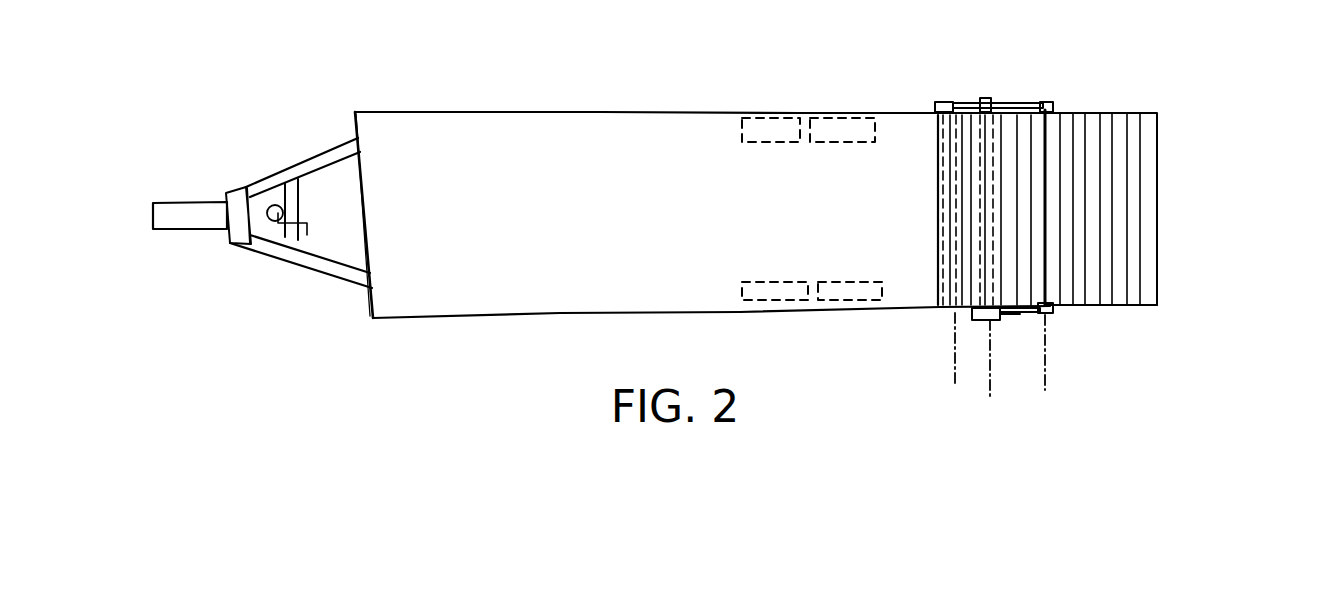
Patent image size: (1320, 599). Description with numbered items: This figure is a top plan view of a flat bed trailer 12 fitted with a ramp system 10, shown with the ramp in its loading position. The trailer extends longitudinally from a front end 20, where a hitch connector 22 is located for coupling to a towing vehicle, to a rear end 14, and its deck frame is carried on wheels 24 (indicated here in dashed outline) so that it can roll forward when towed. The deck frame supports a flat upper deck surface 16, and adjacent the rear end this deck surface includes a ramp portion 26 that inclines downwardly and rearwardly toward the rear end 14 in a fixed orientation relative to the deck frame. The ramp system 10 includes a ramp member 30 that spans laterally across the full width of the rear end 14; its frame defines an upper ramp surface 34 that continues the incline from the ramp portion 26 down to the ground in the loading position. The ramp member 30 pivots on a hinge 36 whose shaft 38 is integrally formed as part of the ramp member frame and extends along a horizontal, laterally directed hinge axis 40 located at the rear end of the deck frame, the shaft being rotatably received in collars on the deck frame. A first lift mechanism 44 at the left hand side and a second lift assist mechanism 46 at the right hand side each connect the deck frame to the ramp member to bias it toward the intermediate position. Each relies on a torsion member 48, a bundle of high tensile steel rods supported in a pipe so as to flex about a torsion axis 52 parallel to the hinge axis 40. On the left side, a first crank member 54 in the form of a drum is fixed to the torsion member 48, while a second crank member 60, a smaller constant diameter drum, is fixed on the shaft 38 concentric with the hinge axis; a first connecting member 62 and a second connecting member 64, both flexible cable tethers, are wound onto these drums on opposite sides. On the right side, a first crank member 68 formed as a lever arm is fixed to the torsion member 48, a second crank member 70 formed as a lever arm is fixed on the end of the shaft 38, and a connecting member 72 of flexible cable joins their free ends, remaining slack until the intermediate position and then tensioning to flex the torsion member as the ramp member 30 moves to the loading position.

The ramp system 10 is at (1027, 40).
The flat bed trailer 12 is at (587, 98).
The rear end 14 is at (1047, 162).
The deck surface 16 is at (521, 186).
The front end 20 is at (356, 125).
The hitch connector 22 is at (193, 203).
The wheels 24 is at (749, 146).
The ramp portion 26 is at (928, 163).
The ramp member 30 is at (1124, 318).
The upper ramp surface 34 is at (1112, 207).
The hinge 36 is at (1054, 253).
The shaft 38 is at (1050, 285).
The hinge axis 40 is at (1047, 395).
The first lift mechanism 44 is at (1020, 338).
The second lift assist mechanism 46 is at (951, 78).
The torsion member 48 is at (987, 223).
The torsion axis 52 is at (950, 378).
The first crank member 54 is at (975, 313).
The second crank member 60 is at (1062, 312).
The first connecting member 62 is at (1005, 318).
The second connecting member 64 is at (959, 401).
The first crank member 68 is at (938, 100).
The second crank member 70 is at (1053, 103).
The connecting member 72 is at (1015, 102).